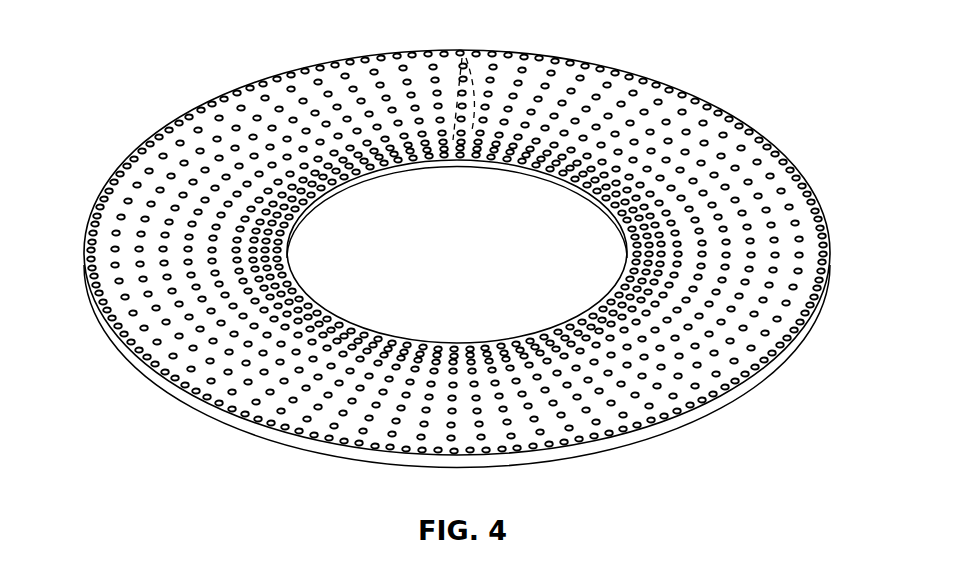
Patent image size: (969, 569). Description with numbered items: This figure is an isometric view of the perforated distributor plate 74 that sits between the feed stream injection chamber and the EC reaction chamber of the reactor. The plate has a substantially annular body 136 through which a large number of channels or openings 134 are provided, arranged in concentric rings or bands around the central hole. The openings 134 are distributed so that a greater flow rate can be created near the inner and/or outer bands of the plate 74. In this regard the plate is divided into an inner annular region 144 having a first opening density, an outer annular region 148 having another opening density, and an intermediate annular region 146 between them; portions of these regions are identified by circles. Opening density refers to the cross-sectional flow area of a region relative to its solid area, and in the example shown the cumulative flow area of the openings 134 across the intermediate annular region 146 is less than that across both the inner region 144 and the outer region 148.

The perforated distributor plate 74 is at (231, 88).
The openings 134 is at (337, 110).
The annular body 136 is at (606, 64).
The inner annular region 144 is at (447, 163).
The intermediate annular region 146 is at (478, 78).
The outer annular region 148 is at (412, 51).